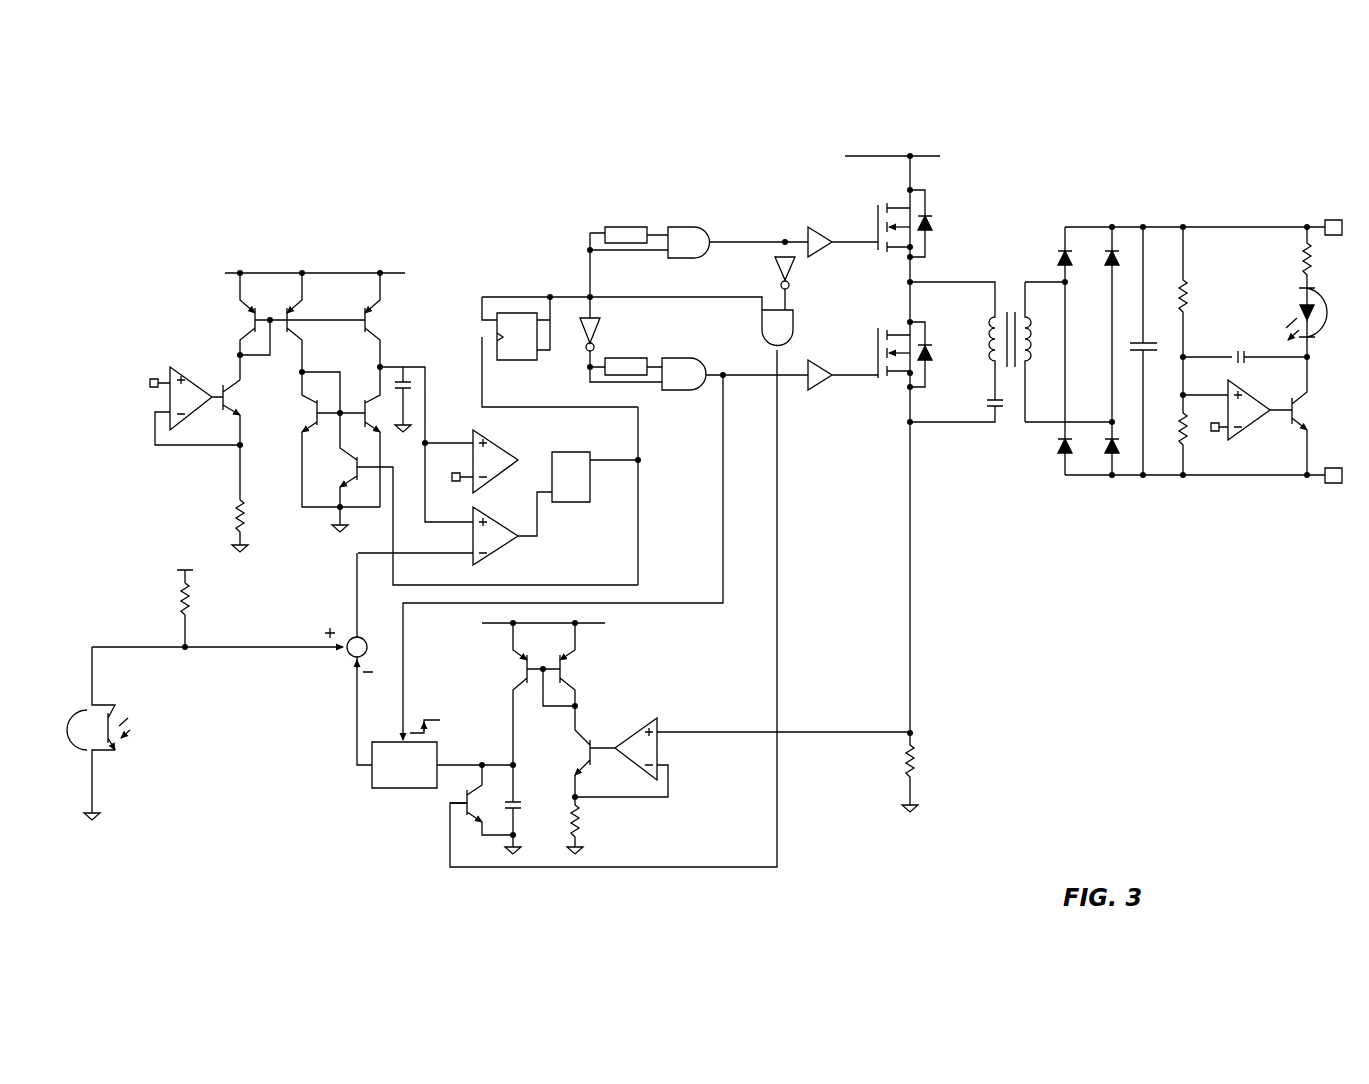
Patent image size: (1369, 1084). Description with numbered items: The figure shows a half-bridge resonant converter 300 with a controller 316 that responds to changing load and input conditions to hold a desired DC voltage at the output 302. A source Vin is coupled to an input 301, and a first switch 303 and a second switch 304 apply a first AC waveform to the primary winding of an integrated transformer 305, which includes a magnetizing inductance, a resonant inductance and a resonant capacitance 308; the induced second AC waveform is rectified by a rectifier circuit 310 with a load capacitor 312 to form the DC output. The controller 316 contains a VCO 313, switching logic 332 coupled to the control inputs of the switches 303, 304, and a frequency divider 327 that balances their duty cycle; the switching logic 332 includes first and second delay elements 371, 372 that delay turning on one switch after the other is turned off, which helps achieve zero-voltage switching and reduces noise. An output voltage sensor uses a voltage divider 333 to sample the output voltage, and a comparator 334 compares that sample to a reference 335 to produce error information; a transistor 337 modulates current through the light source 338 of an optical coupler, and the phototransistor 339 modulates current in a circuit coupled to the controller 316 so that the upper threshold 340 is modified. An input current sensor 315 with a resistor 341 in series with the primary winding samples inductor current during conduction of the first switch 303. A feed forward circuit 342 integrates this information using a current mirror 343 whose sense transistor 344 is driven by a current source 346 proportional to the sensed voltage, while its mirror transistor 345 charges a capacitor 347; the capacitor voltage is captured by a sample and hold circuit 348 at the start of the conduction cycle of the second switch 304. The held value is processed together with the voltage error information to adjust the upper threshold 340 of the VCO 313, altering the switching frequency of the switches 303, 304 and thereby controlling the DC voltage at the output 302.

The half-bridge resonant converter 300 is at (768, 108).
The input 301 is at (900, 143).
The output 302 is at (1323, 193).
The first switch 303 is at (878, 228).
The second switch 304 is at (878, 353).
The integrated transformer 305 is at (1012, 255).
The resonant capacitance 308 is at (1000, 412).
The rectifier circuit 310 is at (1076, 205).
The load capacitor 312 is at (1152, 346).
The VCO 313 is at (288, 250).
The input current sensor 315 is at (960, 748).
The controller 316 is at (462, 155).
The frequency divider 327 is at (508, 313).
The switching logic 332 is at (720, 200).
The voltage divider 333 is at (1198, 320).
The comparator 334 is at (1255, 425).
The reference 335 is at (1215, 432).
The transistor 337 is at (1295, 398).
The light source 338 is at (1300, 312).
The phototransistor 339 is at (115, 753).
The upper threshold 340 is at (352, 562).
The resistor 341 is at (912, 762).
The feed forward circuit 342 is at (530, 895).
The current mirror 343 is at (606, 662).
The sense transistor 344 is at (558, 672).
The mirror transistor 345 is at (515, 672).
The current source 346 is at (630, 705).
The capacitor 347 is at (515, 800).
The sample and hold circuit 348 is at (400, 790).
The first delay element 371 is at (618, 227).
The second delay element 372 is at (618, 358).